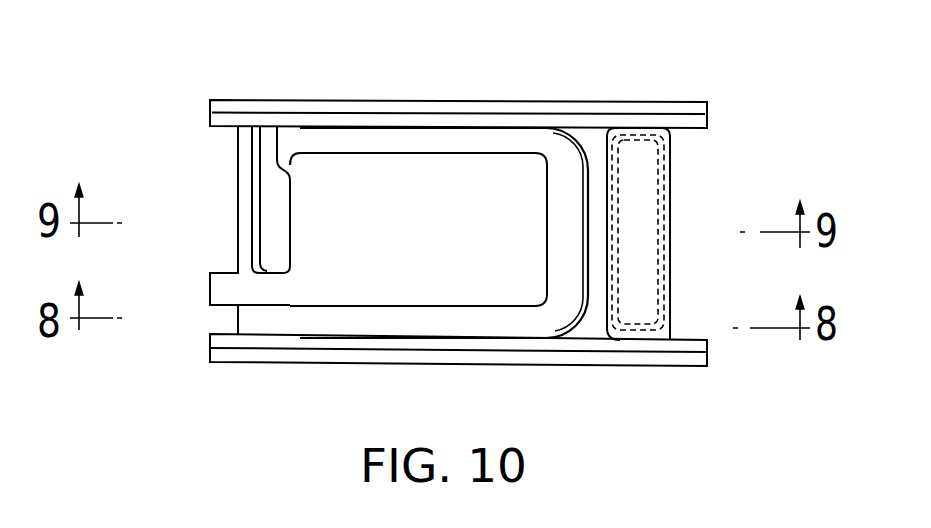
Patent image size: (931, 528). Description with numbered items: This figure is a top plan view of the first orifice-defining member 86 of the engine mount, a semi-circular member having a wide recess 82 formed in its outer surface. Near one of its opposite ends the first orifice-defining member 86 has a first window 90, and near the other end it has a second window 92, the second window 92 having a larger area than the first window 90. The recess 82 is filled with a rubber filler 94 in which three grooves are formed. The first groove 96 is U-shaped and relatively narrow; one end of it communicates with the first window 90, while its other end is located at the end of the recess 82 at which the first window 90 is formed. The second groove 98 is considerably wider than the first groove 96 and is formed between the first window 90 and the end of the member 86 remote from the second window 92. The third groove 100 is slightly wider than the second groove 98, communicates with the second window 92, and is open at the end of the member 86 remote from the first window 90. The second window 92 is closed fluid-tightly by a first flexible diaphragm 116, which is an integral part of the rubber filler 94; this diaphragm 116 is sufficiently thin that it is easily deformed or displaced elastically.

The recess 82 is at (576, 117).
The first orifice-defining member 86 is at (416, 364).
The first window 90 is at (281, 150).
The second window 92 is at (660, 268).
The rubber filler 94 is at (434, 172).
The first groove 96 is at (497, 340).
The second groove 98 is at (218, 124).
The third groove 100 is at (683, 130).
The first flexible diaphragm 116 is at (635, 152).